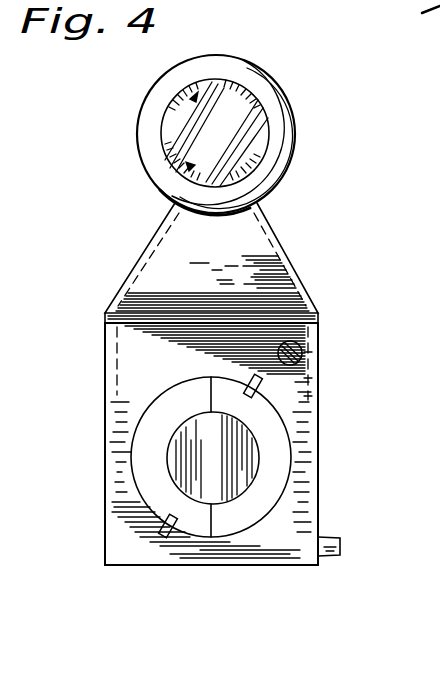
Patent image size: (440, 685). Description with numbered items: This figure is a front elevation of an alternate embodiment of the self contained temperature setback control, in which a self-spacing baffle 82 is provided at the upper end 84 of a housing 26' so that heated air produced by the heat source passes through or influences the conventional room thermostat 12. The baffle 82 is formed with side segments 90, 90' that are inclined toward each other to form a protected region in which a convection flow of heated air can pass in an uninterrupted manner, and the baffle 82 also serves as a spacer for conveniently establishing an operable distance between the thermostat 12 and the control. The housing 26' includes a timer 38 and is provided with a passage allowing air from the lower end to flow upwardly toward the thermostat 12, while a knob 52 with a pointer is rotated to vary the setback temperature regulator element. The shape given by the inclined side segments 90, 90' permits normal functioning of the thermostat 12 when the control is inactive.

The room thermostat 12 is at (295, 154).
The self-spacing baffle 82 is at (313, 282).
The side segment 90 is at (115, 259).
The side segment 90' is at (319, 259).
The housing 26' is at (252, 444).
The upper end 84 is at (318, 345).
The timer 38 is at (180, 398).
The knob 52 is at (332, 555).